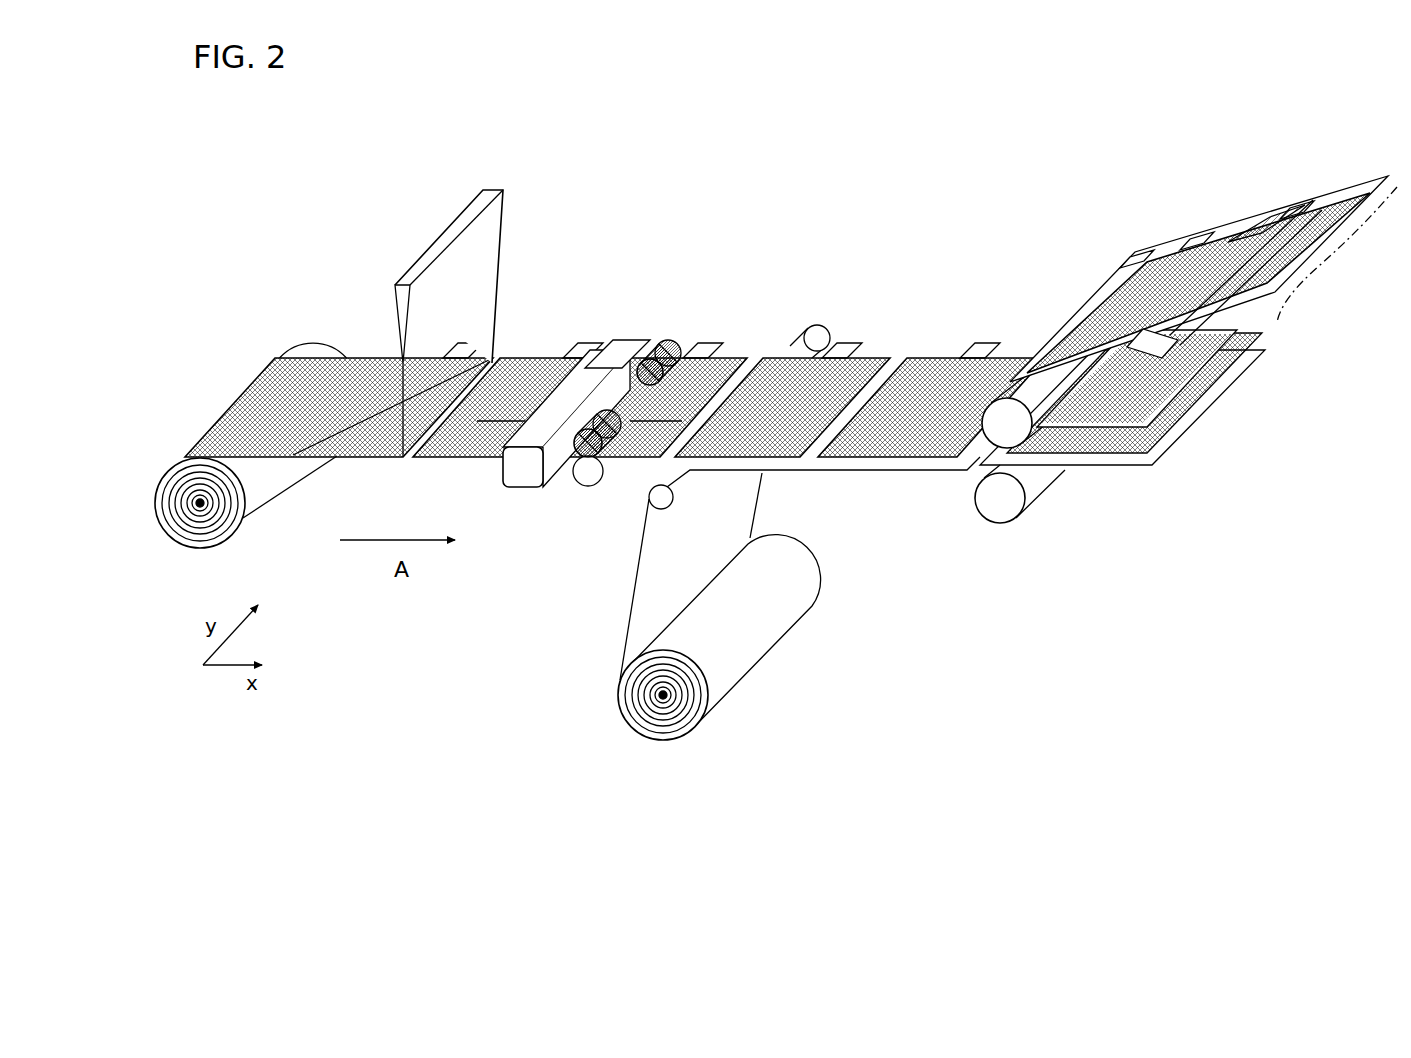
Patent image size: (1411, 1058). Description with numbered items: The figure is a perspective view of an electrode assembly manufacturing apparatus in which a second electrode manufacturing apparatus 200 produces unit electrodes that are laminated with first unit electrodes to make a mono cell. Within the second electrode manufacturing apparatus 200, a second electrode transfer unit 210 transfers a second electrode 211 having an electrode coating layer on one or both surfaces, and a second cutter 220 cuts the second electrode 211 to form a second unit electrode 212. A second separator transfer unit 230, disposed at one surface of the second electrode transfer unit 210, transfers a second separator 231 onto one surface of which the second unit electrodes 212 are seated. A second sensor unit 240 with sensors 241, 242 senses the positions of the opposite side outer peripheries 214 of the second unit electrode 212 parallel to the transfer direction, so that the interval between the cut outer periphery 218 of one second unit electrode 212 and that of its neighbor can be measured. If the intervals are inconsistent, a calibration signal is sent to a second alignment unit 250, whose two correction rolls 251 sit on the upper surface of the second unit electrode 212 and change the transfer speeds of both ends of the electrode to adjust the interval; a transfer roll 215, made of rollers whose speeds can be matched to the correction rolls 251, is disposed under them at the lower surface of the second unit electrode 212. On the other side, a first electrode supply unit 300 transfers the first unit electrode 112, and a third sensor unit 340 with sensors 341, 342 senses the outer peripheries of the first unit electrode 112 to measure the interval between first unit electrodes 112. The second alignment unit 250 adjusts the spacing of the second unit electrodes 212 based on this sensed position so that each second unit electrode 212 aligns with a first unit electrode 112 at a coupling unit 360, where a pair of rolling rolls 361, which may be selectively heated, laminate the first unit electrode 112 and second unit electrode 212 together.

The first unit electrode 112 is at (1095, 283).
The second electrode manufacturing apparatus 200 is at (372, 293).
The second electrode transfer unit 210 is at (297, 350).
The second electrode 211 is at (355, 458).
The second unit electrode 212 is at (478, 458).
The opposite side outer peripheries 214 is at (643, 458).
The transfer roll 215 is at (582, 482).
The cut outer periphery 218 is at (772, 346).
The second cutter 220 is at (484, 188).
The second separator transfer unit 230 is at (607, 738).
The second separator 231 is at (627, 632).
The second sensor unit 240 is at (632, 278).
The sensor 241 is at (617, 352).
The sensor 242 is at (538, 440).
The second alignment unit 250 is at (775, 213).
The correction roll 251 is at (648, 337).
The first electrode supply unit 300 is at (1150, 231).
The third sensor unit 340 is at (1293, 143).
The sensor 341 is at (1244, 222).
The sensor 342 is at (1162, 318).
The coupling unit 360 is at (1105, 512).
The rolling roll 361 is at (1040, 488).